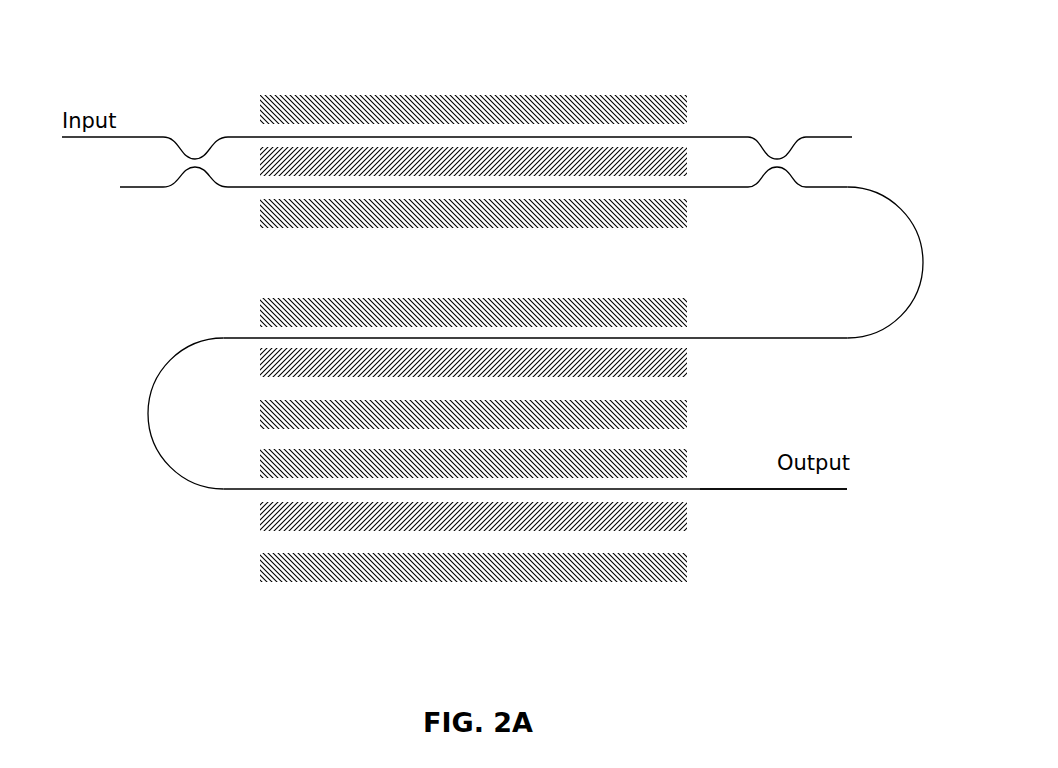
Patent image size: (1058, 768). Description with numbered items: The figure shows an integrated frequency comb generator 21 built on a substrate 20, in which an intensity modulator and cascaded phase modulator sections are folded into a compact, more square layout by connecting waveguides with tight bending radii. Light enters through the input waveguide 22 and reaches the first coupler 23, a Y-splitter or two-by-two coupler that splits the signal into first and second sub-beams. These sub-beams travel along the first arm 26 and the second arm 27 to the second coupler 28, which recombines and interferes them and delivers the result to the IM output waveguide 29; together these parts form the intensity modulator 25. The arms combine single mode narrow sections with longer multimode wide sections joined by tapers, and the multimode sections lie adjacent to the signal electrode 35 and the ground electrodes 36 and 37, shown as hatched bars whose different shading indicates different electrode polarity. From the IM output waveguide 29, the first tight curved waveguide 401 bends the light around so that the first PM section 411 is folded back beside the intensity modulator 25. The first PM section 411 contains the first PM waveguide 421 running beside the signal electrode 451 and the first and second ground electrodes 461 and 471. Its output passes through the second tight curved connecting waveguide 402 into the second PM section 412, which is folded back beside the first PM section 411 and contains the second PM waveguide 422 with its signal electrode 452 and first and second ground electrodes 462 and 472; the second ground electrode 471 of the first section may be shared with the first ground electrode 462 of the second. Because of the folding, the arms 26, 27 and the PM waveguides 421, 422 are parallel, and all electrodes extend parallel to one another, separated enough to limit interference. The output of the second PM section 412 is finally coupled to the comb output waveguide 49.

The substrate 20 is at (646, 640).
The integrated frequency comb generator 21 is at (145, 560).
The input waveguide 22 is at (72, 140).
The first coupler 23 is at (190, 150).
The intensity modulator 25 is at (638, 65).
The first arm 26 is at (241, 136).
The second arm 27 is at (241, 189).
The second coupler 28 is at (773, 158).
The IM output waveguide 29 is at (840, 182).
The signal electrode 35 is at (406, 155).
The ground electrode 36 is at (320, 103).
The ground electrode 37 is at (524, 208).
The first tight curved waveguide 401 is at (923, 284).
The second tight curved connecting waveguide 402 is at (150, 437).
The first PM section 411 is at (188, 318).
The second PM section 412 is at (795, 556).
The first PM waveguide 421 is at (725, 336).
The second PM waveguide 422 is at (243, 491).
The signal electrode 451 is at (685, 371).
The signal electrode 452 is at (680, 522).
The first ground electrode 461 is at (370, 306).
The first ground electrode 462 is at (685, 455).
The second ground electrode 471 is at (685, 412).
The second ground electrode 472 is at (474, 576).
The comb output waveguide 49 is at (847, 492).